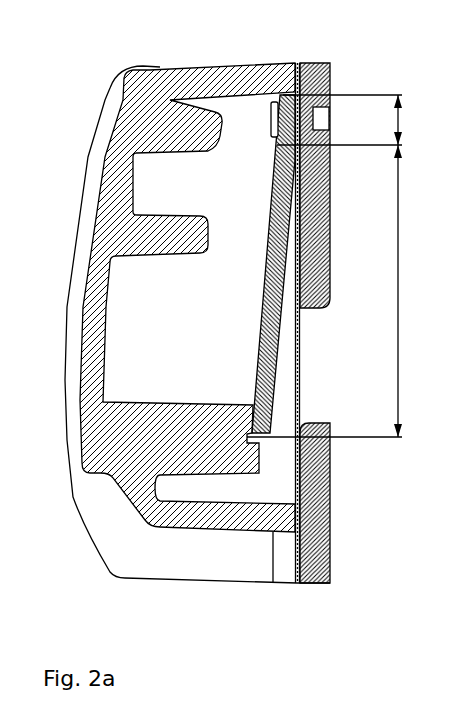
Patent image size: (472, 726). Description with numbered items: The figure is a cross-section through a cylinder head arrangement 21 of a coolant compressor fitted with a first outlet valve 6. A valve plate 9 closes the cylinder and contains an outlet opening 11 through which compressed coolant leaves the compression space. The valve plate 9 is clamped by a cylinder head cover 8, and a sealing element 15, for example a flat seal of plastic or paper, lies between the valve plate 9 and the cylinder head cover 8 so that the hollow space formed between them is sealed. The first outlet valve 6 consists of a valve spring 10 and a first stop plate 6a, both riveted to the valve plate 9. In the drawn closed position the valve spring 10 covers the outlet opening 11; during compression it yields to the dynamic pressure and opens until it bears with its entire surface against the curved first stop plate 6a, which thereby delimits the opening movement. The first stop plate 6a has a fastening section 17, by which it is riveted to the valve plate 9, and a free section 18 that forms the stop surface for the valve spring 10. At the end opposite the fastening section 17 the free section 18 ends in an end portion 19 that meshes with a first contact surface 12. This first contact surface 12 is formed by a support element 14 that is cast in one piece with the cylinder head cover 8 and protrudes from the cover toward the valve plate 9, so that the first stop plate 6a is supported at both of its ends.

The cylinder head arrangement 21 is at (226, 50).
The valve plate 9 is at (320, 80).
The fastening section 17 is at (360, 120).
The free section 18 is at (345, 291).
The first outlet valve 6 is at (238, 323).
The first stop plate 6a is at (253, 382).
The first contact surface 12 is at (250, 418).
The cylinder head cover 8 is at (90, 378).
The valve spring 10 is at (297, 345).
The outlet opening 11 is at (320, 378).
The end portion 19 is at (288, 432).
The sealing element 15 is at (297, 562).
The support element 14 is at (223, 450).